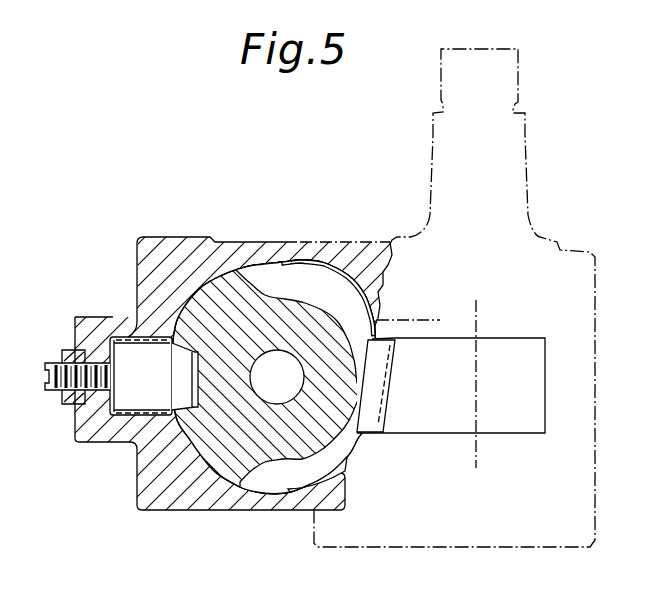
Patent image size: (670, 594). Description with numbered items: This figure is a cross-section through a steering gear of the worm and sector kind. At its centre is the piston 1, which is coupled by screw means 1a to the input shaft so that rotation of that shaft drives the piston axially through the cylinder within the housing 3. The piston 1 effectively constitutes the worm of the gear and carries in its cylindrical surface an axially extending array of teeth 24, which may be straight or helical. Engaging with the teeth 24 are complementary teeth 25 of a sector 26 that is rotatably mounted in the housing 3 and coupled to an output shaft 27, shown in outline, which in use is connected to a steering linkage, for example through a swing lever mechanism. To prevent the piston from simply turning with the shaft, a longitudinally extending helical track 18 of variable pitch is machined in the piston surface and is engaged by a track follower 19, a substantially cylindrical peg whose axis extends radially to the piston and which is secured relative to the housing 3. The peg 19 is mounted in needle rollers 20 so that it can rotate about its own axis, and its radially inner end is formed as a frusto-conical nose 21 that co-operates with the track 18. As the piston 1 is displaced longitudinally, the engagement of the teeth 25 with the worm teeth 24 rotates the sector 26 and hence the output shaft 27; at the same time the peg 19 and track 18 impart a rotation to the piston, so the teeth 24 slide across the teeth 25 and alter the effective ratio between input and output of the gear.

The piston 1 is at (222, 452).
The screw means 1a is at (305, 392).
The housing 3 is at (181, 242).
The track 18 is at (197, 380).
The track follower 19 is at (125, 405).
The needle rollers 20 is at (124, 333).
The frusto-conical nose 21 is at (183, 356).
The teeth 24 is at (304, 290).
The teeth 25 is at (373, 362).
The sector 26 is at (502, 352).
The output shaft 27 is at (522, 68).